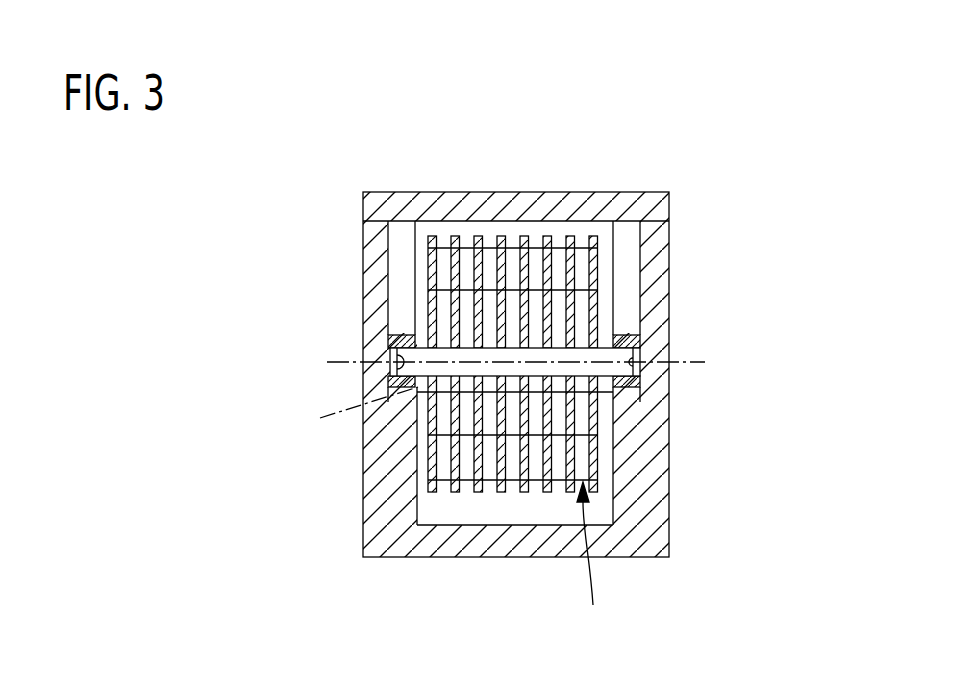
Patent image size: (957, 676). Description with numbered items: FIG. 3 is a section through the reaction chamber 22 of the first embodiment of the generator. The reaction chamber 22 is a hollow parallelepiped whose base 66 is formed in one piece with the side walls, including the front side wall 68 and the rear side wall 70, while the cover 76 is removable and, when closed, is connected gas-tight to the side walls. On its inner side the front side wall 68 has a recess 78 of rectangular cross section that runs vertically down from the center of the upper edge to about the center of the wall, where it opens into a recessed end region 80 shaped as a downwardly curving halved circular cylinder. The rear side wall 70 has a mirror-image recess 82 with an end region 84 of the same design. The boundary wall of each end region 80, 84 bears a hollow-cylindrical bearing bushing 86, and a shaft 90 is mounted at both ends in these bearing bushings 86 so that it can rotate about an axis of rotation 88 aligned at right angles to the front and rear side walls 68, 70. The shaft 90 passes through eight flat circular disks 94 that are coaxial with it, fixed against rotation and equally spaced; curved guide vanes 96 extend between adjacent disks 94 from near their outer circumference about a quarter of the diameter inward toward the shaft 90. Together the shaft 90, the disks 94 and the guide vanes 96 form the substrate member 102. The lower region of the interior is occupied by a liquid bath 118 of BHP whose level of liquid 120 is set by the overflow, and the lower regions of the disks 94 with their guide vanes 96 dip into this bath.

The reaction chamber 22 is at (675, 557).
The base 66 is at (478, 540).
The front side wall 68 is at (648, 472).
The rear side wall 70 is at (397, 510).
The cover 76 is at (408, 207).
The recess 78 is at (623, 237).
The end region 80 is at (641, 348).
The recess 82 is at (397, 247).
The end region 84 is at (393, 367).
The bearing bushing 86 is at (400, 337).
The axis of rotation 88 is at (388, 402).
The shaft 90 is at (605, 352).
The disk 94 is at (477, 237).
The guide vane 96 is at (513, 287).
The substrate member 102 is at (607, 558).
The liquid bath 118 is at (537, 508).
The level of liquid 120 is at (602, 392).